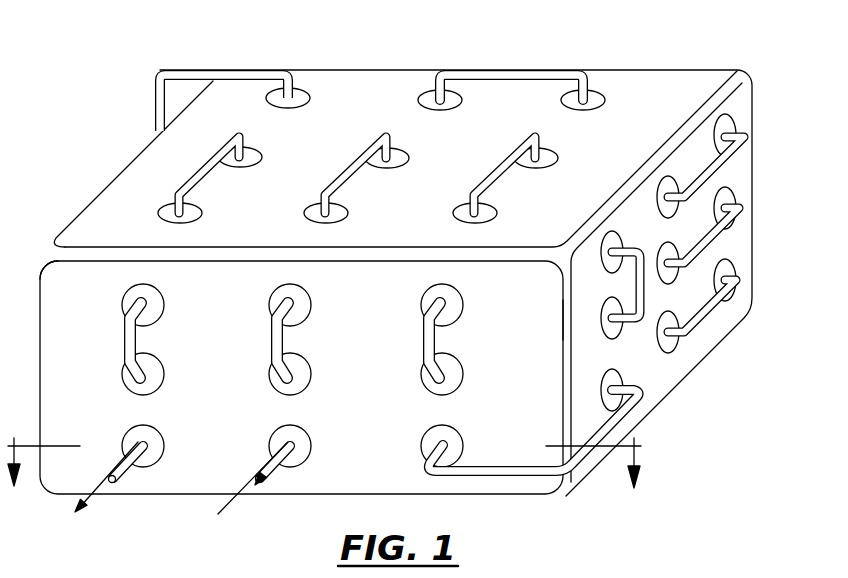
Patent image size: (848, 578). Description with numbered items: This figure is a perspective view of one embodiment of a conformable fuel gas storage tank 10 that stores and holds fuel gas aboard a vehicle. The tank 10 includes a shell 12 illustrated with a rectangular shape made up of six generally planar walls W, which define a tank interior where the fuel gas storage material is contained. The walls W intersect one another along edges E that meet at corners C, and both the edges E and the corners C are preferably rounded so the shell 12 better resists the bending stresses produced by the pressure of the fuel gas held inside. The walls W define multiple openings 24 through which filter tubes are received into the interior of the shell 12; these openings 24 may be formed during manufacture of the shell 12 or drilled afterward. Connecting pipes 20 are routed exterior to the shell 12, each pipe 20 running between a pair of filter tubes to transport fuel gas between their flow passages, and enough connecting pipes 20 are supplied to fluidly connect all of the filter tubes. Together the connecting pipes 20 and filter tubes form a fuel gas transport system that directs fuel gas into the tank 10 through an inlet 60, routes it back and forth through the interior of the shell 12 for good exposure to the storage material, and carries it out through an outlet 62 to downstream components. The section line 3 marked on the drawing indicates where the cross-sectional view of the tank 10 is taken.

The conformable fuel gas storage tank 10 is at (726, 47).
The shell 12 is at (350, 67).
The connecting pipes 20 is at (357, 155).
The openings 24 is at (492, 217).
The inlet 60 is at (283, 484).
The outlet 62 is at (125, 483).
The section line 3 is at (324, 481).
The corners C is at (55, 255).
The edges E is at (680, 138).
The walls W is at (441, 196).